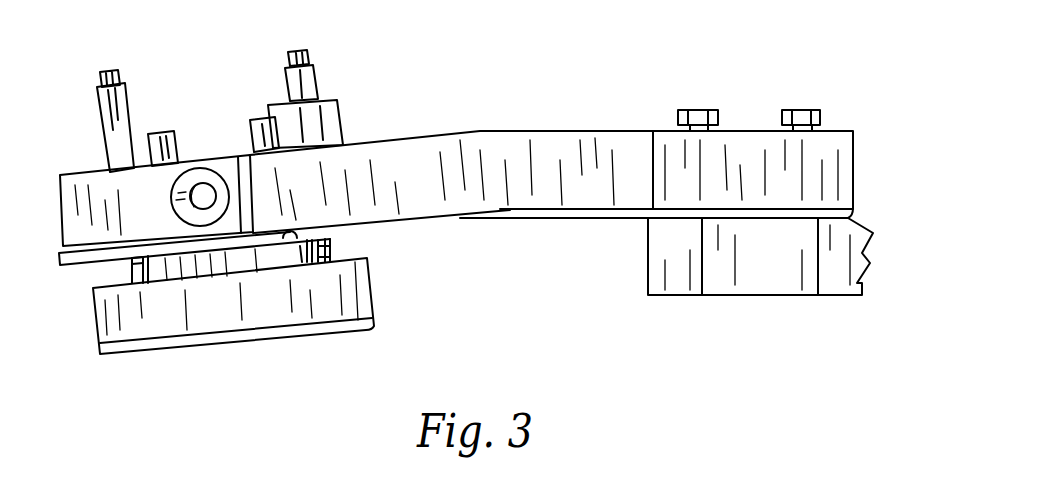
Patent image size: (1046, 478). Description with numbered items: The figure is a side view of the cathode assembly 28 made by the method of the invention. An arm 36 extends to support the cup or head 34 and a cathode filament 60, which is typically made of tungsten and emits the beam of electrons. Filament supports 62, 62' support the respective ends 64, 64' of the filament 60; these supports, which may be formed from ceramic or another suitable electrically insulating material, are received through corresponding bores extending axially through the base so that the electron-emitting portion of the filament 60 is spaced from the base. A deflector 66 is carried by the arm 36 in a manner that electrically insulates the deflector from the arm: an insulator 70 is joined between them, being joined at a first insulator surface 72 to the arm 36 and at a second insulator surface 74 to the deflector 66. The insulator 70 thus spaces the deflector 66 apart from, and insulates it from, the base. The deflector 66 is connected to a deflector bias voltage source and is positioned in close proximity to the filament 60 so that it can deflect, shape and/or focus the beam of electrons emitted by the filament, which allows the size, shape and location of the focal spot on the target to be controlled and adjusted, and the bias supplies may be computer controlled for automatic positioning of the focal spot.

The cathode assembly 28 is at (718, 72).
The cup or head 34 is at (63, 228).
The arm 36 is at (492, 150).
The cathode filament 60 is at (132, 270).
The filament support 62 is at (87, 122).
The filament support 62' is at (341, 106).
The filament end 64 is at (125, 49).
The filament end 64' is at (340, 46).
The deflector 66 is at (150, 322).
The insulator 70 is at (207, 264).
The first insulator surface 72 is at (303, 263).
The second insulator surface 74 is at (258, 268).